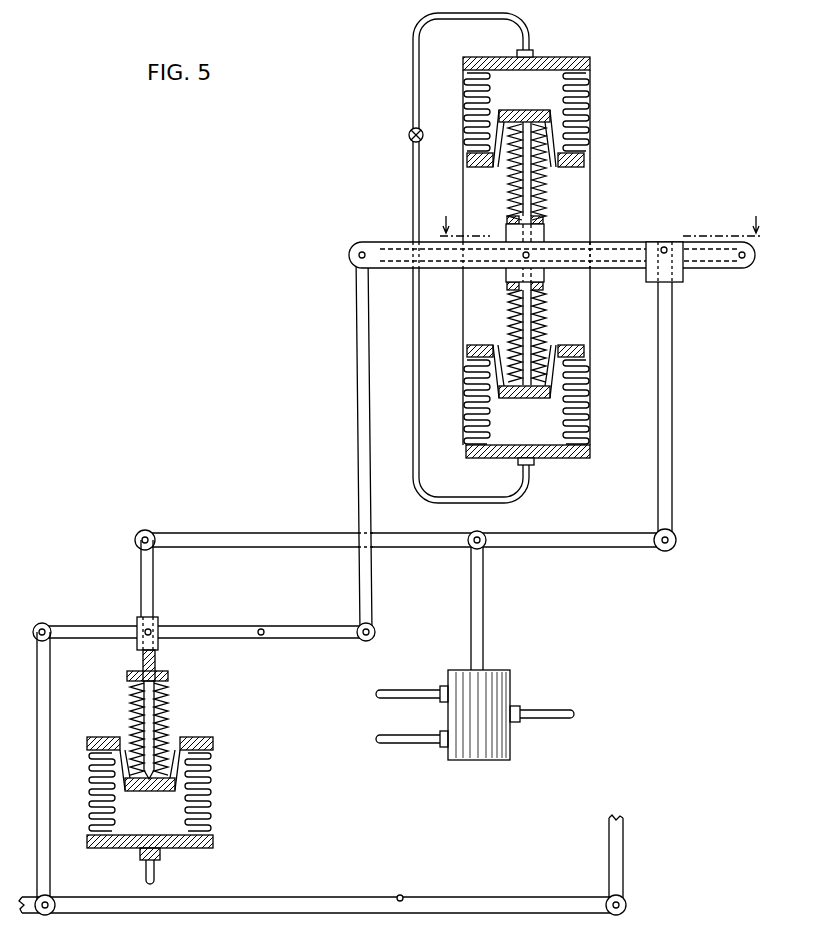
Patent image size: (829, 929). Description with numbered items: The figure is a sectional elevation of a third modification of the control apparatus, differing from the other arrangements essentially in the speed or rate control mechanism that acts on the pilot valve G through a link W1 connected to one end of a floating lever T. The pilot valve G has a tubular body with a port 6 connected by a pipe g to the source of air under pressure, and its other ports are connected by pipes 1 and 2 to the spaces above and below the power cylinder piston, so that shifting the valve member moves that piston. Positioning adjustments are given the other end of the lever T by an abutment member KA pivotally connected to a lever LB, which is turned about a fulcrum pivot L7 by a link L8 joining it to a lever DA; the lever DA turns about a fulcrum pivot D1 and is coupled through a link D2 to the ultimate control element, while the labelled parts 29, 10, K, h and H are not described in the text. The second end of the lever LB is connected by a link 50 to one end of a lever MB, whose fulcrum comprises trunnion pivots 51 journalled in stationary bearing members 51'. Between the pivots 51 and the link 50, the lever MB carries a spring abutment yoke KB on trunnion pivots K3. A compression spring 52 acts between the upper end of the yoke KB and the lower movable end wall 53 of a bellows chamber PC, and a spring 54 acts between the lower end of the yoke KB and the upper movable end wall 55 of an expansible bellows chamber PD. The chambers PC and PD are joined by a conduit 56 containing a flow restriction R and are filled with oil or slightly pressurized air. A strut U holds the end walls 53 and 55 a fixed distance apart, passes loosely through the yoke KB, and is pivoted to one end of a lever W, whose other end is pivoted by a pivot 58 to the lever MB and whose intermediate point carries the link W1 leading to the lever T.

The conduit 56 is at (414, 82).
The flow restriction R is at (409, 135).
The bellows chamber PC is at (543, 76).
The lower movable end wall 53 is at (560, 133).
The compression spring 52 is at (514, 186).
The link or strut U is at (535, 184).
The spring abutment yoke KB is at (544, 236).
The spring 54 is at (512, 314).
The upper movable end wall 55 is at (552, 376).
The expansible bellows chamber PD is at (545, 432).
The lever W is at (604, 244).
The trunnion pivots K3 is at (530, 258).
The lever MB is at (598, 262).
The pivot 58 is at (745, 259).
The stationary bearing members 51' is at (685, 272).
The trunnion pivots 51 is at (674, 231).
The port 6 is at (601, 215).
The floating lever T is at (296, 546).
The link 29 is at (152, 582).
The link 10 is at (483, 609).
The link W1 is at (673, 374).
The link 50 is at (357, 372).
The lever LB is at (224, 630).
The fulcrum pivot L7 is at (263, 636).
The link L8 is at (50, 694).
The abutment member KA is at (144, 666).
The spring K is at (167, 700).
The bellows h is at (186, 772).
The base H is at (138, 820).
The lever DA is at (292, 897).
The fulcrum pivot D1 is at (401, 895).
The link D2 is at (623, 860).
The pilot valve G is at (478, 750).
The pipe 1 is at (406, 692).
The pipe 2 is at (396, 738).
The pipe g is at (545, 716).